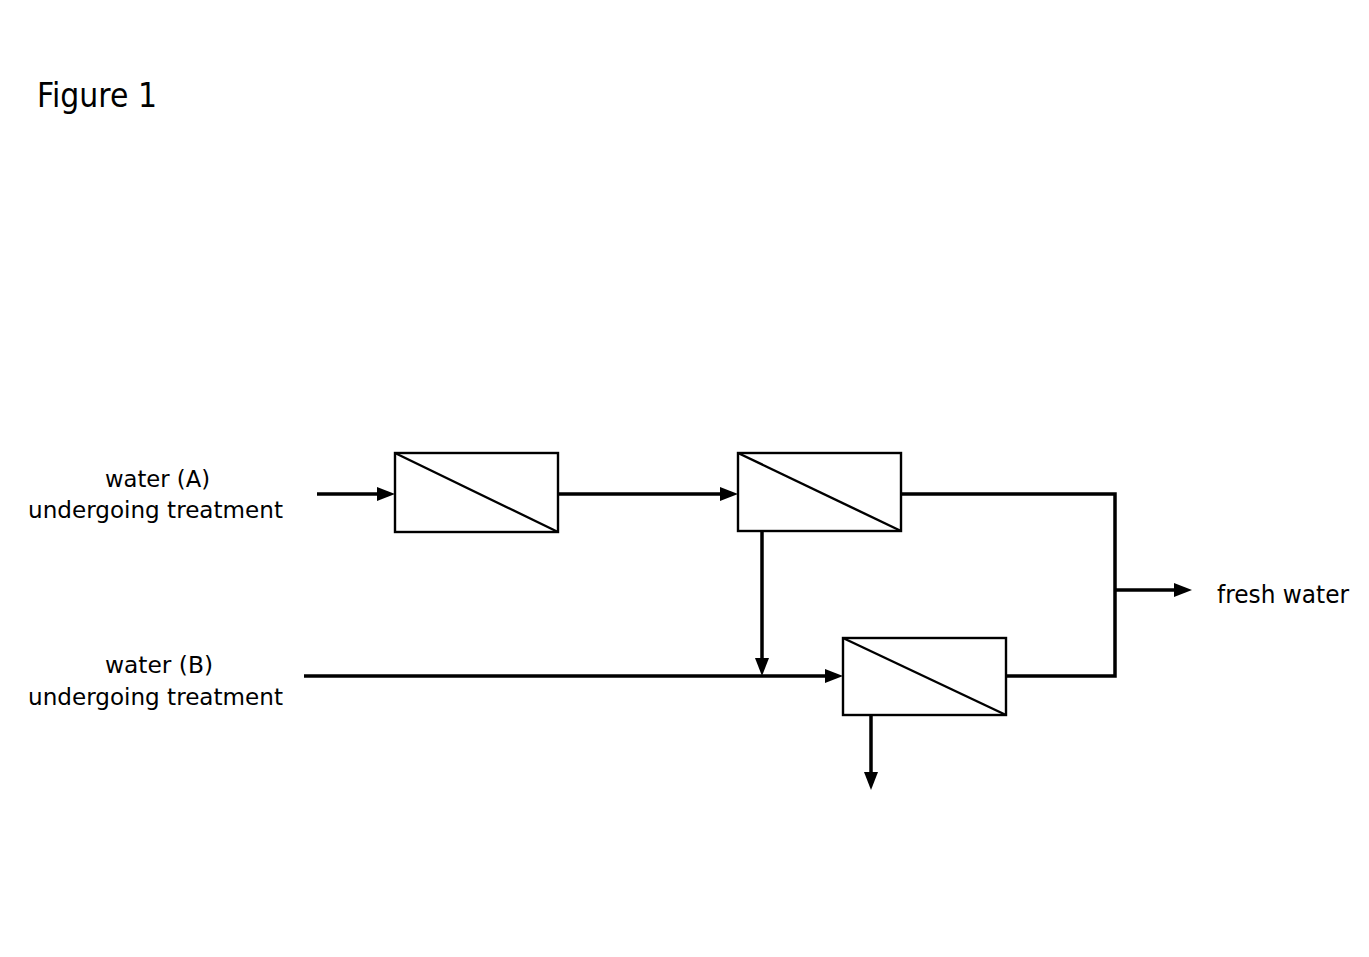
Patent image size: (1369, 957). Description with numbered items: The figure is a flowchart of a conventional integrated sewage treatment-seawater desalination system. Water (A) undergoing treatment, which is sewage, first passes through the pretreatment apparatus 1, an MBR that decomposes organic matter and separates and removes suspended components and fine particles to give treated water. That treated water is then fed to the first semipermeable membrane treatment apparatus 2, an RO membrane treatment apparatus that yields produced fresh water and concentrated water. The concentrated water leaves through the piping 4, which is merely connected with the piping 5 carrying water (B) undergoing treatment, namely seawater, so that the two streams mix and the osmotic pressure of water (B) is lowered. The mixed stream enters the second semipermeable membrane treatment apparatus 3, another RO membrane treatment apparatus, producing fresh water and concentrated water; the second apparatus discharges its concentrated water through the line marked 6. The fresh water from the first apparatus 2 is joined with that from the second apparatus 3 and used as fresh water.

The pretreatment apparatus 1 is at (512, 441).
The first semipermeable membrane treatment apparatus 2 is at (886, 432).
The second semipermeable membrane treatment apparatus 3 is at (950, 742).
The piping of the concentrated water 4 is at (736, 596).
The piping of the water (B) undergoing treatment 5 is at (485, 696).
The concentrate discharge line 6 is at (845, 751).